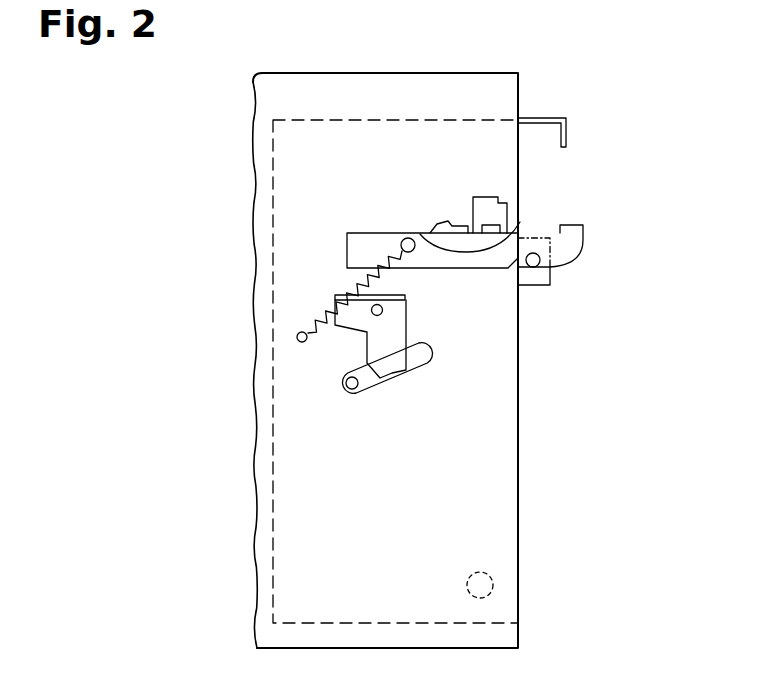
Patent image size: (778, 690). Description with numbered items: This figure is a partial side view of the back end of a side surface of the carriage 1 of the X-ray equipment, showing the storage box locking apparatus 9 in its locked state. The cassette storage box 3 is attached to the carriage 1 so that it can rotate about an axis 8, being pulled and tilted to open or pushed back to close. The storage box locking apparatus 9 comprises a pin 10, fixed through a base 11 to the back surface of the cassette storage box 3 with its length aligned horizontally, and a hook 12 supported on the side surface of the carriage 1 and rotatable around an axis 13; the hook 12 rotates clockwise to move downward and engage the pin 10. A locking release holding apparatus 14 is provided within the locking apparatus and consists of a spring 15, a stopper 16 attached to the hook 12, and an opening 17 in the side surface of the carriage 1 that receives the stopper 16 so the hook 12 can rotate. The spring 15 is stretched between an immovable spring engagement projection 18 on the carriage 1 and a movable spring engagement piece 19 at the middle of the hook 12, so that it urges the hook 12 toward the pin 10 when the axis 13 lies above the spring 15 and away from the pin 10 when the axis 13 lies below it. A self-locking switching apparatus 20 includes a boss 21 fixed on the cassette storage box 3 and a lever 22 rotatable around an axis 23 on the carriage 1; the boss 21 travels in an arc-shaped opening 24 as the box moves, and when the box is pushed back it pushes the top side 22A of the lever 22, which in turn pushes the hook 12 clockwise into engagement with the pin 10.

The carriage 1 is at (263, 102).
The cassette storage box 3 is at (498, 493).
The axis 8 is at (490, 578).
The storage box locking apparatus 9 is at (605, 292).
The pin 10 is at (538, 267).
The base 11 is at (535, 286).
The hook 12 is at (583, 238).
The axis 13 is at (400, 236).
The locking release holding apparatus 14 is at (556, 177).
The spring 15 is at (520, 222).
The stopper 16 is at (496, 225).
The opening 17 is at (493, 220).
The spring engagement projection 18 is at (298, 339).
The spring engagement piece 19 is at (463, 225).
The self-locking switching apparatus 20 is at (447, 395).
The boss 21 is at (345, 418).
The lever 22 is at (417, 371).
The top side 22A is at (403, 287).
The axis 23 is at (383, 312).
The arc-shaped opening 24 is at (430, 360).